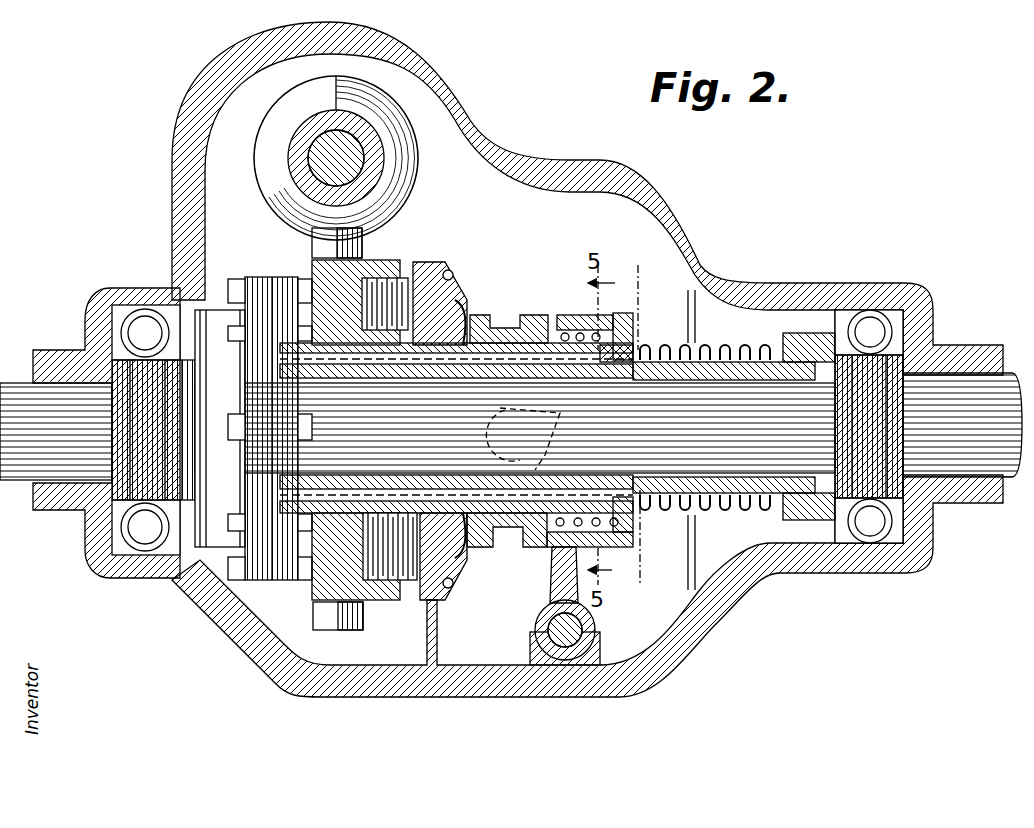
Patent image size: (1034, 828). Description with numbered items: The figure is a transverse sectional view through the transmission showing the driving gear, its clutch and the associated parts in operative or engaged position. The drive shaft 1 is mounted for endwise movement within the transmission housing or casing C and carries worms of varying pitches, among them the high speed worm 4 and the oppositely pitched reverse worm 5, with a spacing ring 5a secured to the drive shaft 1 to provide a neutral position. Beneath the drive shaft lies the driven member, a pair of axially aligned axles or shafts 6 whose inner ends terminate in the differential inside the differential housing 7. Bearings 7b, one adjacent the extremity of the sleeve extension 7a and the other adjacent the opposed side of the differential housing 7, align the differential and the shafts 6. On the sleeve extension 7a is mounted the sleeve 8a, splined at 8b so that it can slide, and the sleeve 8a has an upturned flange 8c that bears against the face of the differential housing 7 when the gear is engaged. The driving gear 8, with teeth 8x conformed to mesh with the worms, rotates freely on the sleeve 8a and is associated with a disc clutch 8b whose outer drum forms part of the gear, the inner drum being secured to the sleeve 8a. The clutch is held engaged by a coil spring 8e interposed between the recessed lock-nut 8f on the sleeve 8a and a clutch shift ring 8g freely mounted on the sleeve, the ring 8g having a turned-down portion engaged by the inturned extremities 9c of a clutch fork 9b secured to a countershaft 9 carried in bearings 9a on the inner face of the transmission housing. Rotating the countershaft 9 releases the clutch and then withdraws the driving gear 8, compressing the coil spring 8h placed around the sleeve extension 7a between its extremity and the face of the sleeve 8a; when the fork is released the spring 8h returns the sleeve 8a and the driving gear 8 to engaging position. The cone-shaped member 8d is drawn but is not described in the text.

The drive shaft 1 is at (352, 170).
The worm 4 is at (652, 283).
The worm 5 is at (266, 178).
The spacing ring 5a is at (315, 148).
The axles or shafts 6 is at (60, 487).
The differential housing 7 is at (272, 585).
The sleeve extension 7a is at (747, 507).
The bearings 7b is at (905, 548).
The driving gear 8 is at (327, 578).
The sleeve 8a is at (616, 353).
The splines / disc clutch 8b is at (338, 470).
The upturned flange 8c is at (280, 340).
The clutch cone 8d is at (438, 270).
The coil spring 8e is at (575, 318).
The recessed lock-nut 8f is at (624, 328).
The clutch shift ring 8g is at (536, 318).
The coil spring 8h is at (707, 345).
The teeth 8x is at (290, 698).
The countershaft 9 is at (597, 625).
The bearings 9a is at (535, 648).
The clutch fork 9b is at (552, 565).
The inturned extremities 9c is at (515, 420).
The transmission housing or casing C is at (486, 118).